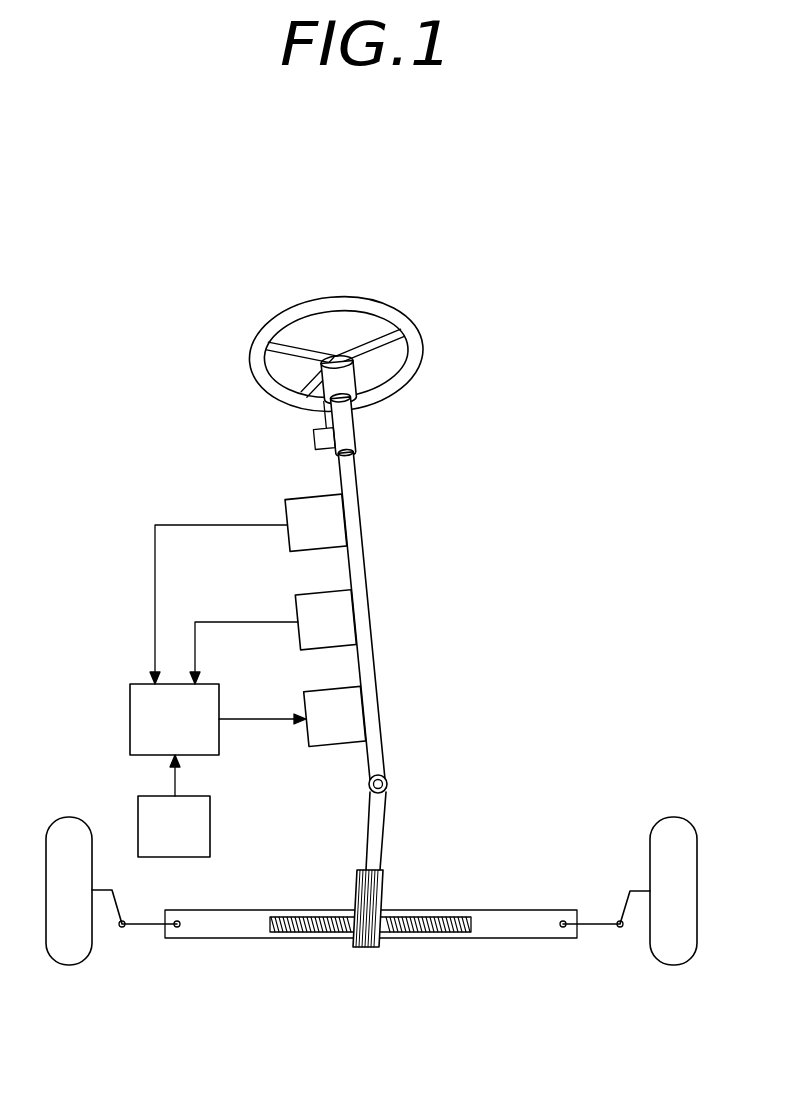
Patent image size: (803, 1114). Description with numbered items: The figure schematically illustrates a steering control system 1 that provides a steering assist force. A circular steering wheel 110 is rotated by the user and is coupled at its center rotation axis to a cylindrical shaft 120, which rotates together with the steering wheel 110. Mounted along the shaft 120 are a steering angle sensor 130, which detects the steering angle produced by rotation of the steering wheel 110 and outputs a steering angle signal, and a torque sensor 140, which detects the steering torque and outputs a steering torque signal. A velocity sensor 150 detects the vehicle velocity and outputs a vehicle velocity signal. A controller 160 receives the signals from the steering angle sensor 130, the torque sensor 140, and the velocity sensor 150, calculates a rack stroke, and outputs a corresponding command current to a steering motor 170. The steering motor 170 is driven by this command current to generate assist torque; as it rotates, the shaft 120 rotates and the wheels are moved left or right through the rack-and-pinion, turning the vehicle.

The steering control system 1 is at (96, 224).
The steering wheel 110 is at (331, 302).
The shaft 120 is at (357, 511).
The steering angle sensor 130 is at (303, 505).
The torque sensor 140 is at (340, 618).
The velocity sensor 150 is at (138, 826).
The controller 160 is at (129, 716).
The steering motor 170 is at (350, 715).